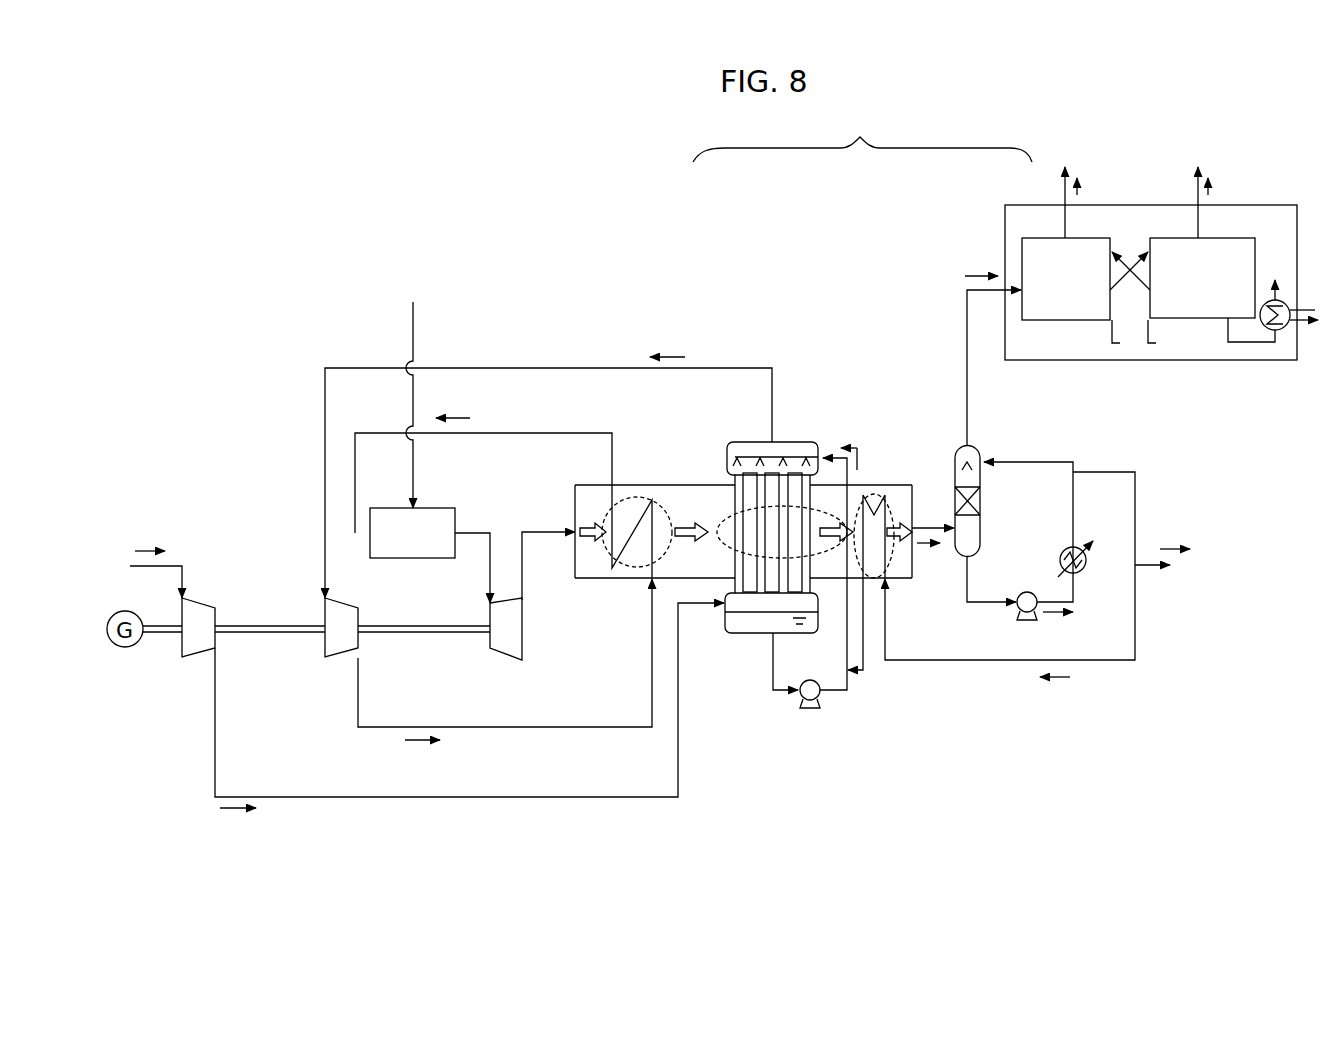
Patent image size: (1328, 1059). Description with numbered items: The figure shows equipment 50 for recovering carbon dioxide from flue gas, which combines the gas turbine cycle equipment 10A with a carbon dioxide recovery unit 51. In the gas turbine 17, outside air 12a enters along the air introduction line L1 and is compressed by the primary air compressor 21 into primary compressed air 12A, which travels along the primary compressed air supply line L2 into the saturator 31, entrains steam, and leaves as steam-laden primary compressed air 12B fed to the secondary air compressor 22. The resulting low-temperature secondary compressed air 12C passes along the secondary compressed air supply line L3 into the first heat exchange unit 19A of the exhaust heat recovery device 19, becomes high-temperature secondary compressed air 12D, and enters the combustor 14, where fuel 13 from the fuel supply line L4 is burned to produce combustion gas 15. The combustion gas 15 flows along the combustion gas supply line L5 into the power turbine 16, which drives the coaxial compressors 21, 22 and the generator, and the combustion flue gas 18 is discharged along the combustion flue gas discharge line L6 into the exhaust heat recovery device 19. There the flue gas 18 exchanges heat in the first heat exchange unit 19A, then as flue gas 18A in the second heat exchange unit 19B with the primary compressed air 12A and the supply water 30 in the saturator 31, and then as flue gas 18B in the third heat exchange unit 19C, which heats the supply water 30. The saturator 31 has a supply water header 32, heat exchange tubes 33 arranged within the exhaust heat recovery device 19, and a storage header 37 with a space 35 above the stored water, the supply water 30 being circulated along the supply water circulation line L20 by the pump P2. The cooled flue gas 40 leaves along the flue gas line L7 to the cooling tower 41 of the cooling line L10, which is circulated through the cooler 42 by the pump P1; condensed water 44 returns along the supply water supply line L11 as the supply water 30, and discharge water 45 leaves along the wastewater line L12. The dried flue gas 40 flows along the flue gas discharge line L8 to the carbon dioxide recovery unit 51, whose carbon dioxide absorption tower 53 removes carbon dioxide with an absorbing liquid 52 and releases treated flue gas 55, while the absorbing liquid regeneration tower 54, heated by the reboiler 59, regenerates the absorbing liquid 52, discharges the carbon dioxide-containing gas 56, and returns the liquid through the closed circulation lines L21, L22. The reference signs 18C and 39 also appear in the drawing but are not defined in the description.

The gas turbine cycle equipment 10A is at (678, 212).
The air 12a is at (148, 551).
The primary compressed air 12A is at (221, 809).
The primary compressed air entraining steam 12B is at (662, 356).
The secondary compressed air (low temperature) 12C is at (410, 742).
The secondary compressed air (high temperature) 12D is at (443, 418).
The fuel 13 is at (402, 338).
The combustor 14 is at (428, 508).
The combustion gas 15 is at (470, 532).
The power turbine 16 is at (524, 642).
The gas turbine 17 is at (489, 665).
The combustion flue gas 18 is at (597, 527).
The combustion flue gas after first heat exchange 18A is at (682, 540).
The combustion flue gas after second heat exchange 18B is at (838, 555).
The cooled treated gas 18C is at (880, 545).
The exhaust heat recovery device 19 is at (656, 484).
The first heat exchange unit 19A is at (630, 566).
The second heat exchange unit 19B is at (733, 513).
The third heat exchange unit 19C is at (895, 558).
The primary air compressor 21 is at (183, 654).
The secondary air compressor 22 is at (324, 653).
The supply water 30 is at (1060, 680).
The saturator 31 is at (788, 438).
The supply water header 32 is at (737, 442).
The heat exchange tubes 33 is at (818, 505).
The space 35 is at (757, 603).
The storage header 37 is at (741, 634).
The spray nozzle supply 39 is at (821, 452).
The flue gas 40 is at (928, 548).
The cooling tower 41 is at (979, 465).
The cooler 42 is at (1061, 550).
The condensed water 44 is at (1053, 613).
The discharge water 45 is at (1165, 548).
The equipment for recovering CO2 from flue gas 50 is at (862, 133).
The CO2 recovery unit 51 is at (1020, 205).
The absorbing liquid 52 is at (1136, 256).
The CO2 absorption tower 53 is at (1085, 238).
The absorbing liquid regeneration tower 54 is at (1232, 240).
The treated flue gas 55 is at (1080, 195).
The gas containing CO2 56 is at (1210, 195).
The reboiler 59 is at (1280, 332).
The air introduction line L1 is at (184, 567).
The primary compressed air supply line L2 is at (323, 798).
The secondary compressed air supply line L3 is at (586, 727).
The fuel supply line L4 is at (414, 320).
The combustion gas supply line L5 is at (472, 571).
The combustion flue gas discharge line L6 is at (548, 571).
The flue gas line L7 is at (925, 523).
The flue gas discharge line L8 is at (965, 352).
The cooling line L10 is at (1050, 462).
The supply water supply line L11 is at (1138, 640).
The wastewater line L12 is at (1138, 520).
The supply water circulation line L20 is at (829, 695).
The circulation line L21 is at (1126, 338).
The circulation line L22 is at (1162, 338).
The pump P1 is at (1018, 610).
The pump P2 is at (798, 697).